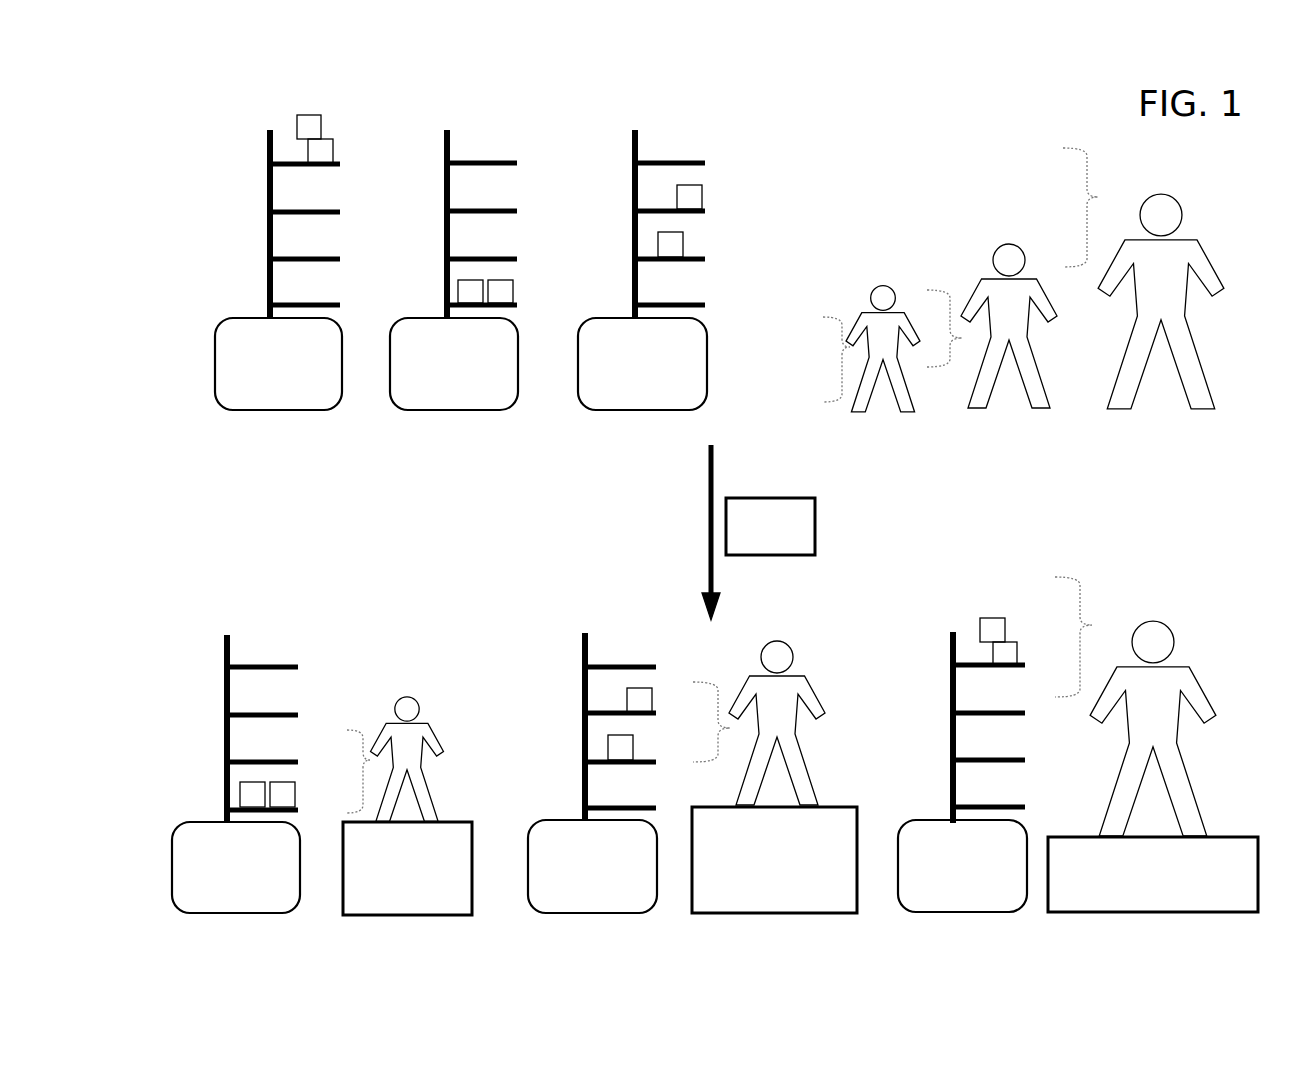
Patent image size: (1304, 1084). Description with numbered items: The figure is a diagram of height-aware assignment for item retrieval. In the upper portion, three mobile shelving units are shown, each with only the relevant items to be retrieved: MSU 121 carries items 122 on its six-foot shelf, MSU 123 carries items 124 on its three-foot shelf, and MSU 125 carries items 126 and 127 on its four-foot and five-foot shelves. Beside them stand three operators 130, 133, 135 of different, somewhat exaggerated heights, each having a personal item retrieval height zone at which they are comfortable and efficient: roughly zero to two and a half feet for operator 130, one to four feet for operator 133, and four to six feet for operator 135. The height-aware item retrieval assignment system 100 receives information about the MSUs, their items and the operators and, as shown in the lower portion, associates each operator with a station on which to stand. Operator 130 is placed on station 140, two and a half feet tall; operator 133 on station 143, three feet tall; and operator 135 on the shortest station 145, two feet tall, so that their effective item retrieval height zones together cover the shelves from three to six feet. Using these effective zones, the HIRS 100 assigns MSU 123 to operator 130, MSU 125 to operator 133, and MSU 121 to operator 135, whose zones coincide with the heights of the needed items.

The height-aware item retrieval assignment system 100 is at (806, 508).
The mobile shelving unit 121 is at (233, 319).
The items for retrieval 122 is at (318, 130).
The mobile shelving unit 123 is at (418, 326).
The items for retrieval 124 is at (505, 283).
The mobile shelving unit 125 is at (610, 323).
The items for retrieval 126 is at (683, 237).
The items for retrieval 127 is at (702, 188).
The operator 130 is at (883, 297).
The operator 133 is at (1006, 253).
The operator 135 is at (1168, 200).
The station 140 is at (442, 830).
The station 143 is at (815, 812).
The station 145 is at (1210, 845).